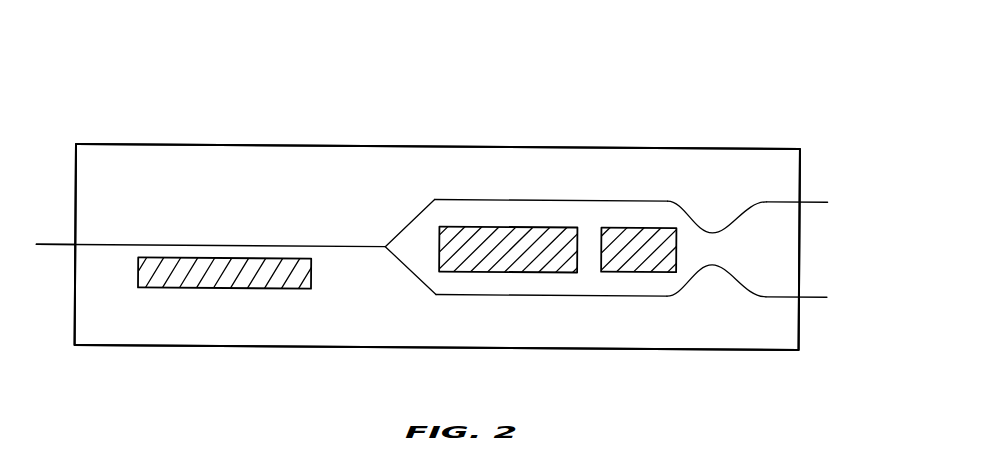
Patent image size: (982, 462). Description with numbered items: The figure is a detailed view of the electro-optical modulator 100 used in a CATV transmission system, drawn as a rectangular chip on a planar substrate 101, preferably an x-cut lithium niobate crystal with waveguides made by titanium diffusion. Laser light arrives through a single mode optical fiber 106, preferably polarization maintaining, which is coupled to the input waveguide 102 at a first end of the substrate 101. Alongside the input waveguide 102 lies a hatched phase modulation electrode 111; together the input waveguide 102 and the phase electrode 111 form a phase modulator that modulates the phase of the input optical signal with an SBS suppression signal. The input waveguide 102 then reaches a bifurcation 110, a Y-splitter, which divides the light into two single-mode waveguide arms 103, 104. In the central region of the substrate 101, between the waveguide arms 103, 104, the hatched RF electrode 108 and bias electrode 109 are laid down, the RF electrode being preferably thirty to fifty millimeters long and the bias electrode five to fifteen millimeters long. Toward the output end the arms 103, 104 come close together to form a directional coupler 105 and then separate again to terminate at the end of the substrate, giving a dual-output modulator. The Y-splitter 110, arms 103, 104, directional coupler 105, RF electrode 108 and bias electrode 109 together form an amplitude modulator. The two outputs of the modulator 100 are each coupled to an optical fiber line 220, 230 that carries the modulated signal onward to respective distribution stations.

The electro-optical modulator 100 is at (190, 94).
The planar substrate 101 is at (364, 153).
The input waveguide 102 is at (93, 244).
The waveguide arm 103 is at (583, 200).
The waveguide arm 104 is at (592, 297).
The directional coupler 105 is at (715, 247).
The single mode optical fiber 106 is at (55, 247).
The RF electrode 108 is at (520, 234).
The bias electrode 109 is at (638, 237).
The bifurcation 110 is at (386, 244).
The phase modulation electrode 111 is at (215, 277).
The optical fiber line 220 is at (815, 202).
The optical fiber line 230 is at (817, 298).